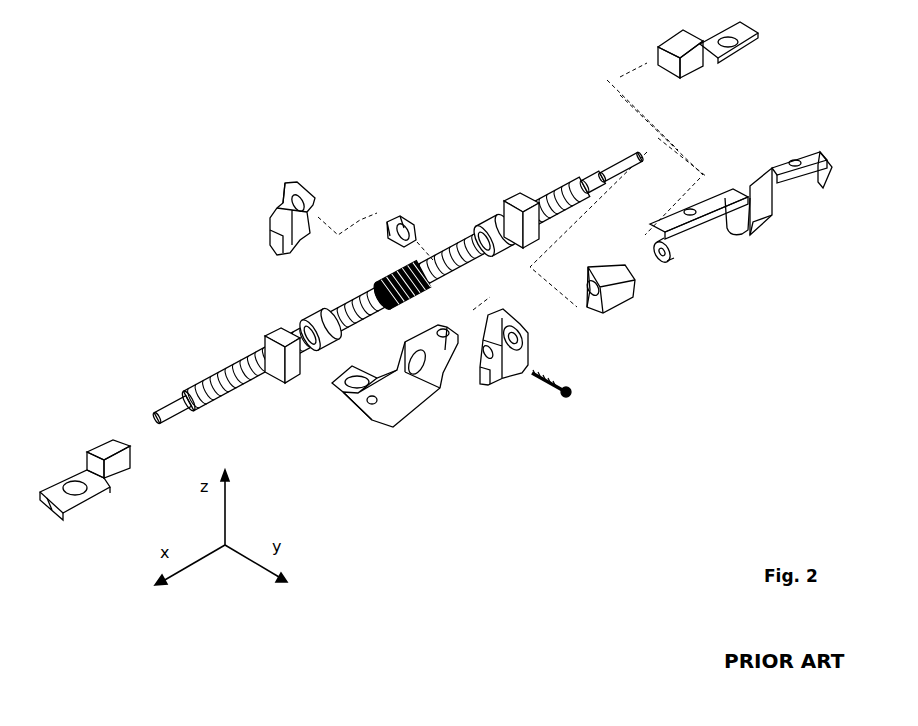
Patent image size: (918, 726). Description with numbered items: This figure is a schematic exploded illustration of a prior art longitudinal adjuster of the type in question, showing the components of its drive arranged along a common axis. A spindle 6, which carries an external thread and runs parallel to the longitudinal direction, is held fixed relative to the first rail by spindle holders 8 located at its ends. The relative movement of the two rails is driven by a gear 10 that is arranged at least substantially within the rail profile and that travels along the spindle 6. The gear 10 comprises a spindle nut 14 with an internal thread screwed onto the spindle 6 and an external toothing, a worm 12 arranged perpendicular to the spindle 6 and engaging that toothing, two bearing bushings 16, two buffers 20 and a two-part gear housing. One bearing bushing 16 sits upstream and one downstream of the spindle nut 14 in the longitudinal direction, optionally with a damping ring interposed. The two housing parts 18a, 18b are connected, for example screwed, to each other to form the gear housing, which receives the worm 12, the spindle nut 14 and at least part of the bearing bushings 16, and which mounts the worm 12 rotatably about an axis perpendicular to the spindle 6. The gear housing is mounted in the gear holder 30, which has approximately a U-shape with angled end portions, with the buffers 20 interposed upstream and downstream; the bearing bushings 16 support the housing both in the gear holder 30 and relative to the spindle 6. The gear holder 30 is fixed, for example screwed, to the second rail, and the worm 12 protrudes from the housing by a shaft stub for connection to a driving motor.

The spindle 6 is at (604, 167).
The spindle holders 8 is at (693, 63).
The gear 10 is at (586, 410).
The worm 12 is at (398, 222).
The spindle nut 14 is at (378, 286).
The bearing bushings 16 is at (486, 232).
The housing part 18a is at (274, 226).
The housing part 18b is at (525, 343).
The buffers 20 is at (520, 198).
The gear holder 30 is at (410, 397).